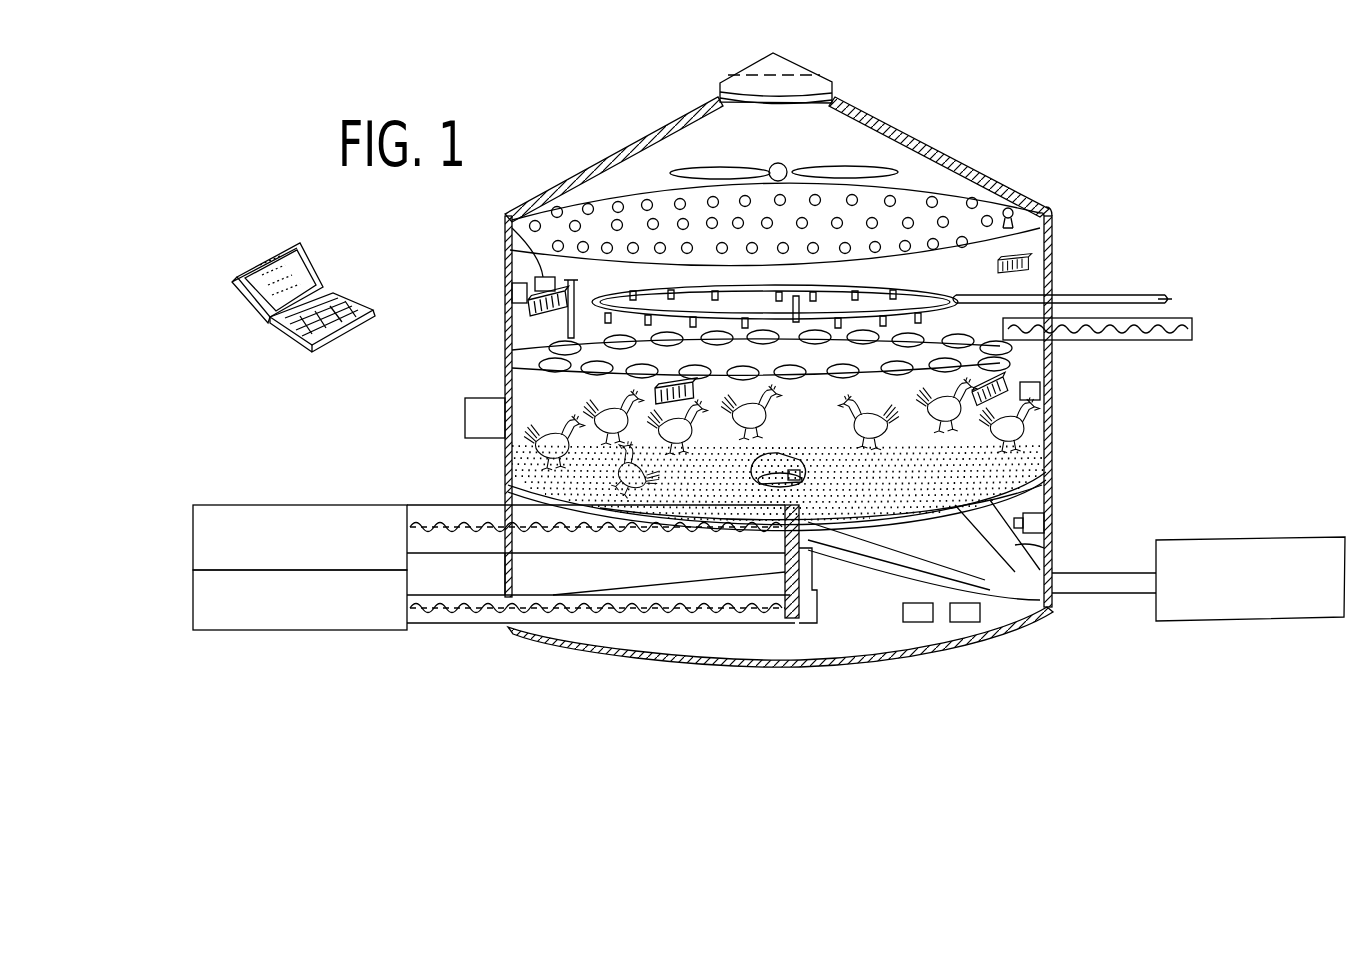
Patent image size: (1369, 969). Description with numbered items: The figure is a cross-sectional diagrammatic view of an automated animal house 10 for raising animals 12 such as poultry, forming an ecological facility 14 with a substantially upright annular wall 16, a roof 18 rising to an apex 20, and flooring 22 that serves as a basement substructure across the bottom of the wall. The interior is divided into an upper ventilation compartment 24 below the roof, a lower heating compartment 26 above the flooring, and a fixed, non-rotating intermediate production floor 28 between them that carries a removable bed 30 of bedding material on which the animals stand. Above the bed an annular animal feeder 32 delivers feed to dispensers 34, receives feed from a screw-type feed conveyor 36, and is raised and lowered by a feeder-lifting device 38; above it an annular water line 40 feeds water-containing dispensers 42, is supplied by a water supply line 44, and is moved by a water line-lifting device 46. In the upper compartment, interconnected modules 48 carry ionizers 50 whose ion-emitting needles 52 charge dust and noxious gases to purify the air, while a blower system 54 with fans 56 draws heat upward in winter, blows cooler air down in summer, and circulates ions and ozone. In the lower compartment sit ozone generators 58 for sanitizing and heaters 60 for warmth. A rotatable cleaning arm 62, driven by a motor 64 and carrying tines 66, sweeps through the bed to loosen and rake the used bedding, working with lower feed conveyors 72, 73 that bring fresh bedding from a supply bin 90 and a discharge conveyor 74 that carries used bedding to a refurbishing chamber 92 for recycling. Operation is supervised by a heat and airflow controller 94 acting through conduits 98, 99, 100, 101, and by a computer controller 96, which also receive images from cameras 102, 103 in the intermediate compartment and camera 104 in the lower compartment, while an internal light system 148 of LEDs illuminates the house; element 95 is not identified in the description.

The automated animal house 10 is at (1066, 204).
The animals 12 is at (1053, 435).
The ecological facility 14 is at (503, 248).
The annular wall 16 is at (1045, 285).
The roof 18 is at (849, 106).
The apex 20 is at (772, 60).
The flooring 22 is at (650, 660).
The upper ventilation compartment 24 is at (865, 140).
The lower heating compartment 26 is at (858, 628).
The intermediate livestock compartment or production floor 28 is at (1058, 470).
The removable bed of bedding material 30 is at (522, 478).
The annular animal feeder 32 is at (560, 346).
The dispensers 34 is at (512, 368).
The feed conveyor 36 is at (1192, 322).
The feeder-lifting device 38 is at (588, 302).
The annular water line 40 is at (880, 292).
The water-containing dispensers 42 is at (1040, 294).
The water supply line 44 is at (1158, 292).
The water line-lifting device 46 is at (795, 300).
The interconnected modules 48 is at (972, 200).
The ionizers 50 is at (620, 205).
The ion-emitting needles 52 is at (1016, 224).
The blower system 54 is at (776, 163).
The fans 56 is at (683, 168).
The ozone generators 58 is at (934, 622).
The heaters 60 is at (982, 622).
The cleaning arm 62 is at (1058, 500).
The motor 64 is at (768, 465).
The tines 66 is at (1058, 485).
The feed conveyor 72 is at (780, 560).
The feed conveyor 73 is at (478, 630).
The discharge conveyor 74 is at (470, 522).
The fresh bedding material supply bin 90 is at (268, 612).
The refurbishing chamber 92 is at (296, 505).
The controller 94 is at (1225, 540).
The sensor 95 is at (465, 418).
The controller 96 is at (270, 318).
The conduit 98 is at (1098, 597).
The conduit 99 is at (868, 545).
The conduit 100 is at (920, 546).
The conduit 101 is at (1053, 558).
The camera 102 is at (505, 284).
The camera 103 is at (1045, 397).
The camera 104 is at (1053, 540).
The internal light system 148 is at (512, 228).